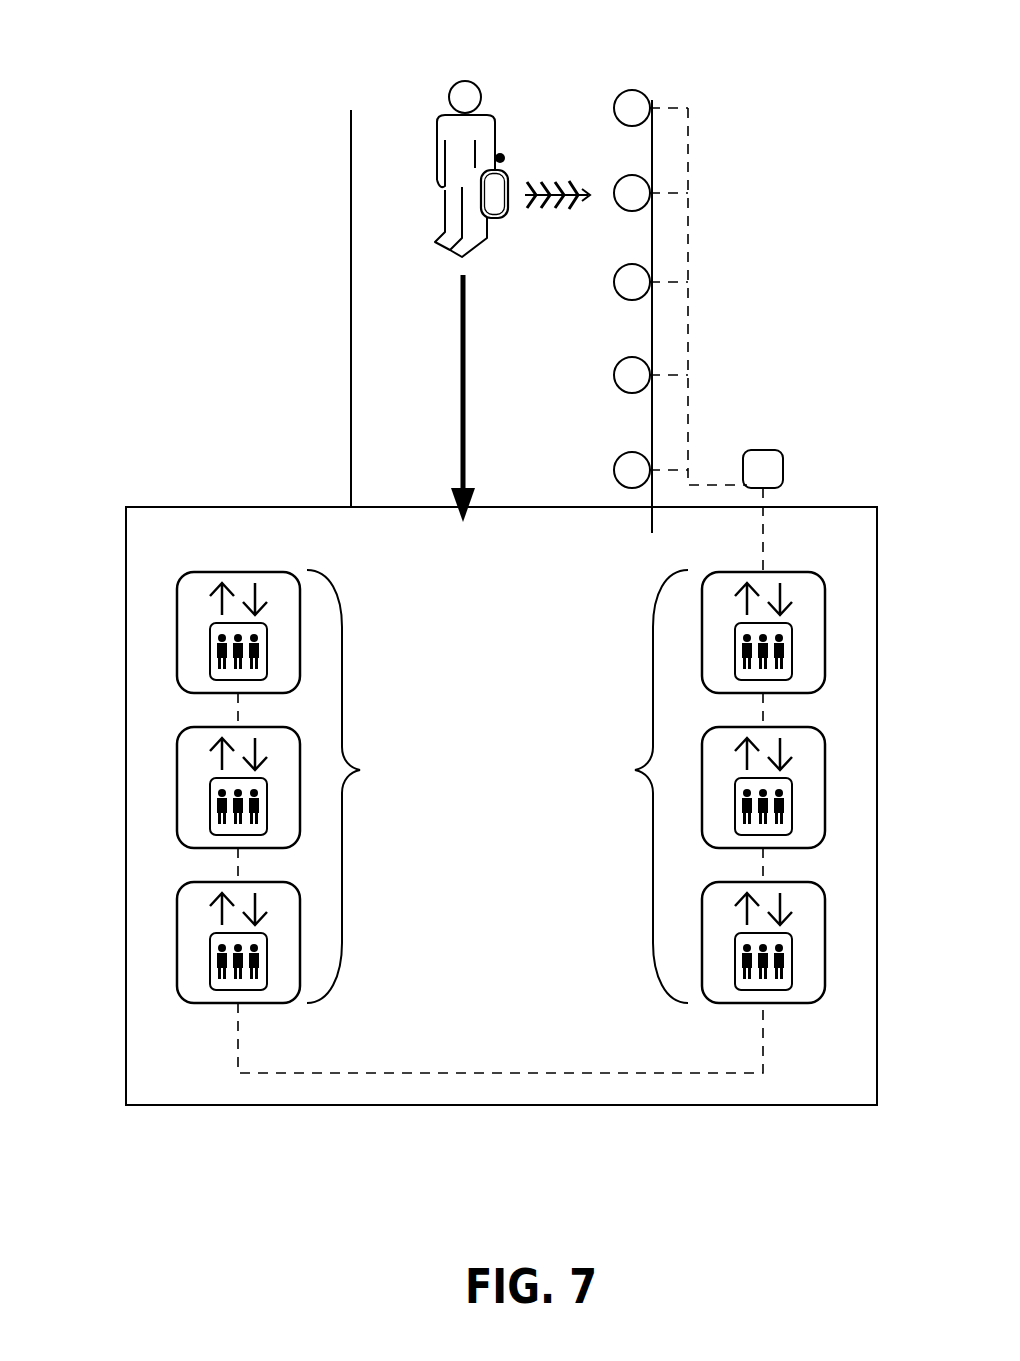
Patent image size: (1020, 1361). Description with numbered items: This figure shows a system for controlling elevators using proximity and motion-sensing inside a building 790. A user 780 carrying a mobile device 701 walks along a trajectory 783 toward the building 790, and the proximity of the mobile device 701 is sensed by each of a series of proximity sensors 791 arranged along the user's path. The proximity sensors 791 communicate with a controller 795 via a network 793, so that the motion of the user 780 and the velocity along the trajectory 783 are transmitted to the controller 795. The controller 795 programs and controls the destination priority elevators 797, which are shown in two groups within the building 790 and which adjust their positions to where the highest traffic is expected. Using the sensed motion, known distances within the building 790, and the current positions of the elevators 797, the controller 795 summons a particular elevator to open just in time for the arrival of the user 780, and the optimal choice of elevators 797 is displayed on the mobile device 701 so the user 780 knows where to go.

The user 780 is at (452, 90).
The mobile device 701 is at (505, 170).
The trajectory 783 is at (460, 375).
The building 790 is at (210, 505).
The proximity sensors 791 is at (641, 93).
The network 793 is at (690, 235).
The controller 795 is at (780, 452).
The elevators 797 is at (635, 770).